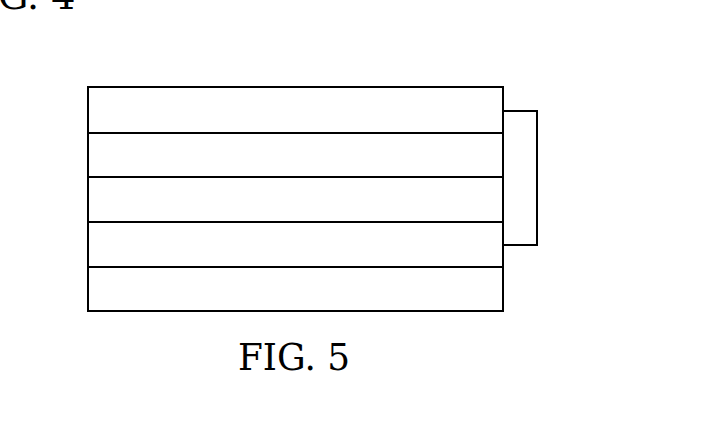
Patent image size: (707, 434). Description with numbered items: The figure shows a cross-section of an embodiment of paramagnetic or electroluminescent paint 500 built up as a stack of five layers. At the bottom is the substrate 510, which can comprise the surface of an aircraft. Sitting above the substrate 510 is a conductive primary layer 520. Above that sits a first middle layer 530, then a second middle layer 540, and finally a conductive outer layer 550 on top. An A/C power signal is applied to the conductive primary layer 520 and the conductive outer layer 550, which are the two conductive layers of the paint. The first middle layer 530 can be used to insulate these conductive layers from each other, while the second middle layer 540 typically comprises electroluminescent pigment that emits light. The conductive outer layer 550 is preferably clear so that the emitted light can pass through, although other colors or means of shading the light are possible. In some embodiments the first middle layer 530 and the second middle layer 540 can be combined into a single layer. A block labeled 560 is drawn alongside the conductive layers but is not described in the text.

The paramagnetic or electroluminescent paint 500 is at (377, 57).
The substrate 510 is at (94, 289).
The conductive primary layer 520 is at (94, 245).
The first middle layer 530 is at (94, 199).
The second middle layer 540 is at (94, 155).
The conductive outer layer 550 is at (94, 111).
The side block 560 is at (538, 166).